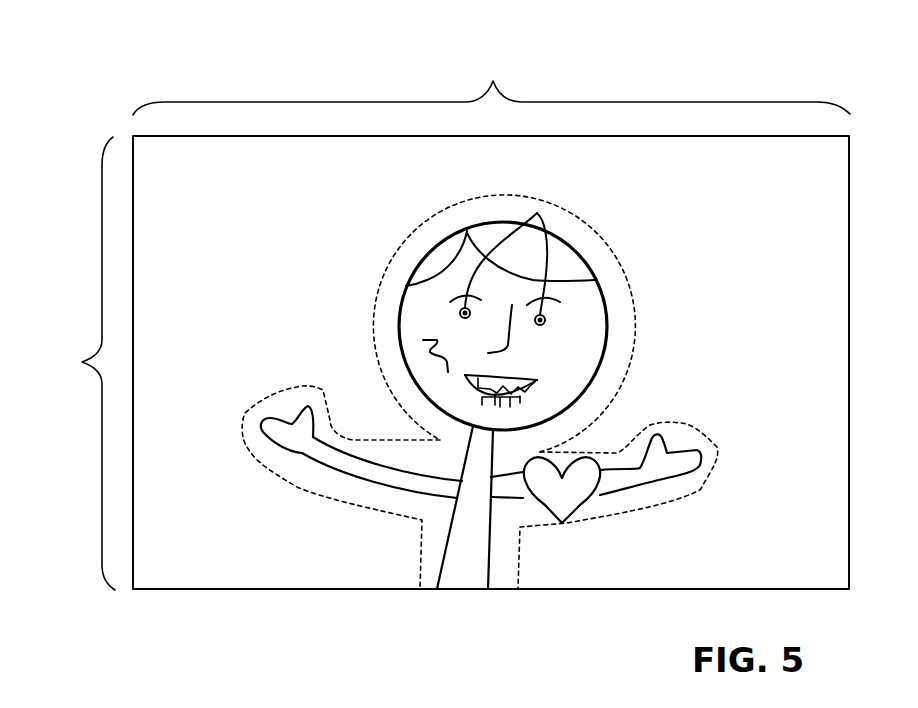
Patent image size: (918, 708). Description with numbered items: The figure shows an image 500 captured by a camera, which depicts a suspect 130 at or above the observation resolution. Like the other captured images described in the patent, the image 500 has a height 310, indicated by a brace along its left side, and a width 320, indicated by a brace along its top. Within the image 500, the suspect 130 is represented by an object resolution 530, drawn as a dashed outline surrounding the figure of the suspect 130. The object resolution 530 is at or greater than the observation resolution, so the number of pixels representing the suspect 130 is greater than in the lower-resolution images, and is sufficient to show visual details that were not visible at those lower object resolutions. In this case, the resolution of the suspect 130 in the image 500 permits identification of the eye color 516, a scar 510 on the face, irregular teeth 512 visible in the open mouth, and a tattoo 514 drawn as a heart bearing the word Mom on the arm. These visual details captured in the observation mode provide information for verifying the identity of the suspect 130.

The image 500 is at (146, 29).
The suspect 130 is at (280, 193).
The width 320 is at (491, 71).
The height 310 is at (68, 363).
The object resolution 530 is at (628, 278).
The scar 510 is at (425, 354).
The mouth of avatar 512 is at (466, 391).
The tattoo 514 is at (566, 522).
The eye color 516 is at (537, 213).